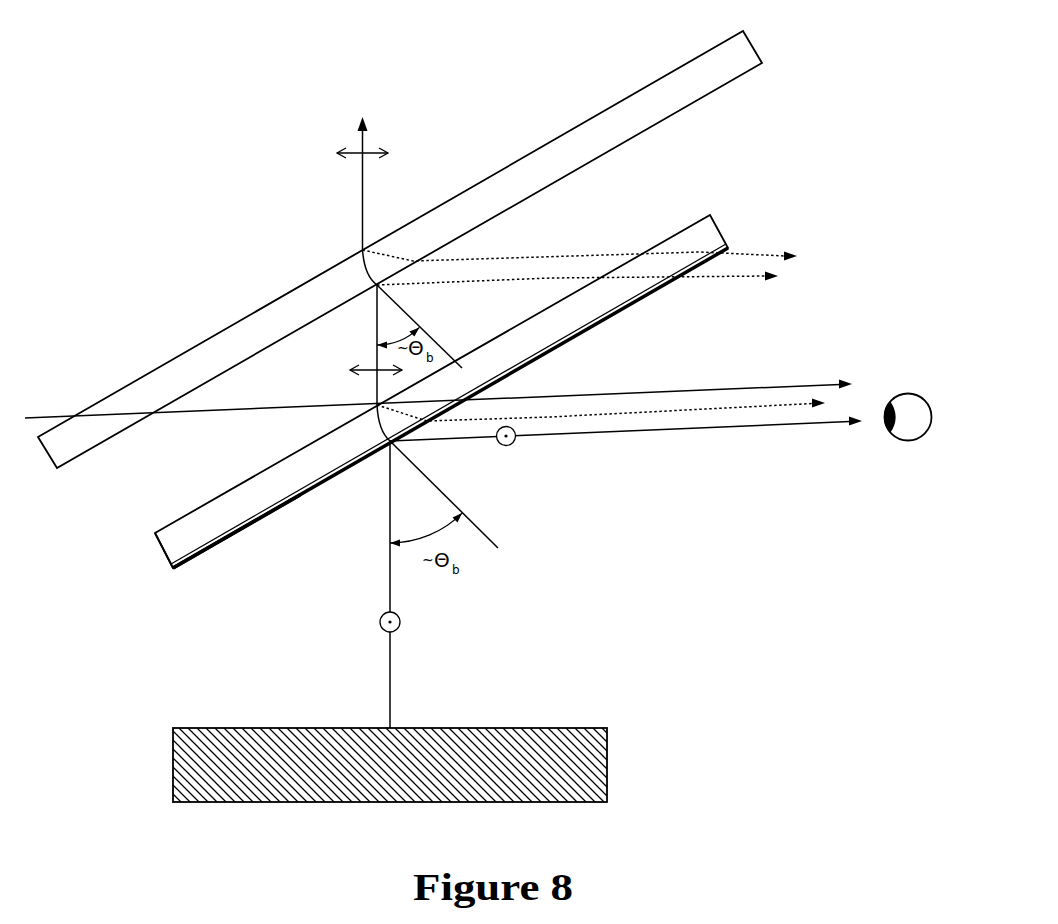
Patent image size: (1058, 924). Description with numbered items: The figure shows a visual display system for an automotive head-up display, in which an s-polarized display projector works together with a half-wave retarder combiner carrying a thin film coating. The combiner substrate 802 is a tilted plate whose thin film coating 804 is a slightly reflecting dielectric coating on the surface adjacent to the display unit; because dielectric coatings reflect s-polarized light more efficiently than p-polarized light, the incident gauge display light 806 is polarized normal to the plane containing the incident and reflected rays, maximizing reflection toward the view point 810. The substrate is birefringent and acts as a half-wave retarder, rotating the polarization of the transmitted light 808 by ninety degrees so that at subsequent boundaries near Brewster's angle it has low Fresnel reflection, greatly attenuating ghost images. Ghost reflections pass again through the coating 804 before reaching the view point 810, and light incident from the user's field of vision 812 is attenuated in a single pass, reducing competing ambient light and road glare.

The combiner substrate 802 is at (162, 547).
The thin film coating 804 is at (729, 245).
The incident gauge display light 806 is at (391, 667).
The transmitted light 808 is at (363, 198).
The view point 810 is at (908, 441).
The light incident from the user's field of vision 812 is at (57, 416).